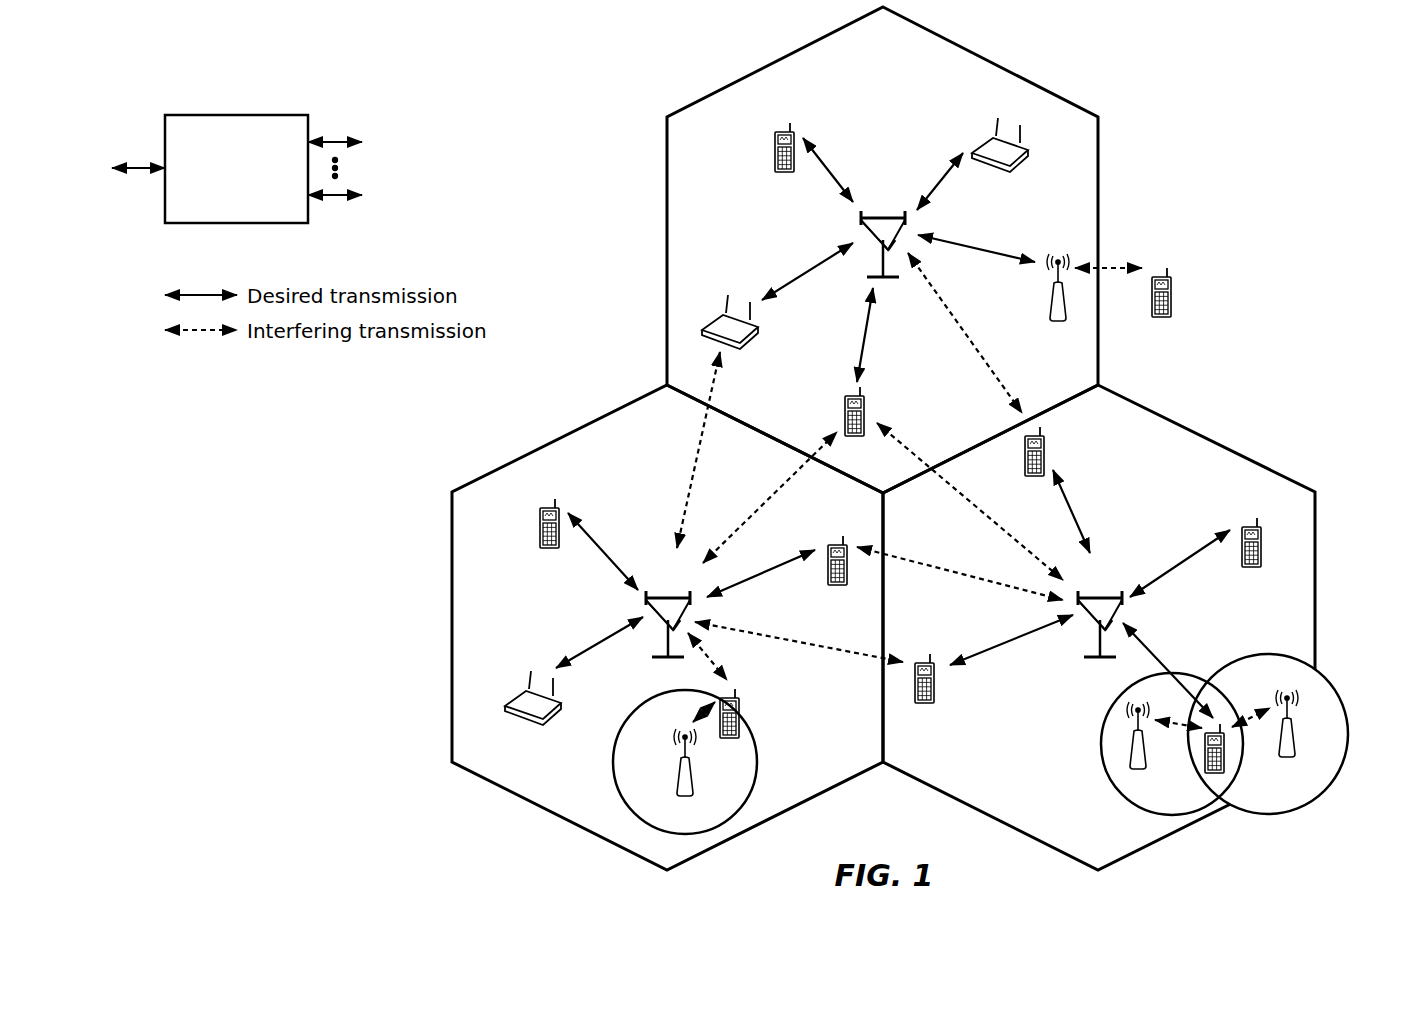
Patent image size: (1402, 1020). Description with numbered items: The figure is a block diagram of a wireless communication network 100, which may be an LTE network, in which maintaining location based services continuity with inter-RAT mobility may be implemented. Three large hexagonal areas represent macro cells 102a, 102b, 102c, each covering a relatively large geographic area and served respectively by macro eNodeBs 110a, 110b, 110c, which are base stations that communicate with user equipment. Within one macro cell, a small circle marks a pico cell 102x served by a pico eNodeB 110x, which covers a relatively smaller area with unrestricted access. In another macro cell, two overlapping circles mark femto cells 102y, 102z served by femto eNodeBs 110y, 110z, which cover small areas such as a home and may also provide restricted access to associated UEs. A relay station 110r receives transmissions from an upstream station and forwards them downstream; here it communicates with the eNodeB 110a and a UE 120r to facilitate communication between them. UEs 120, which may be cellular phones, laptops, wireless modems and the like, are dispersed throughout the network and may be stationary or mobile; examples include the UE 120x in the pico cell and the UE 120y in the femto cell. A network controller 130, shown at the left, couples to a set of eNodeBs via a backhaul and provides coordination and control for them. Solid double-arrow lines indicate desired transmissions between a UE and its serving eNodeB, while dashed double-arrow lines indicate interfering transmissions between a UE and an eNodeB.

The wireless communication network 100 is at (1249, 73).
The macro cell 102a is at (1000, 59).
The macro cell 102b is at (544, 438).
The macro cell 102c is at (1215, 438).
The pico cell 102x is at (621, 708).
The femto cell 102y is at (1107, 710).
The femto cell 102z is at (1272, 653).
The macro eNodeB 110a is at (885, 215).
The macro eNodeB 110b is at (671, 593).
The macro eNodeB 110c is at (1106, 593).
The relay station 110r is at (1048, 303).
The pico eNodeB 110x is at (694, 786).
The femto eNodeB 110y is at (1148, 762).
The femto eNodeB 110z is at (1296, 745).
The UE 120 is at (770, 139).
The UE 120r is at (1172, 307).
The UE 120x is at (739, 709).
The UE 120y is at (1204, 766).
The network controller 130 is at (235, 116).